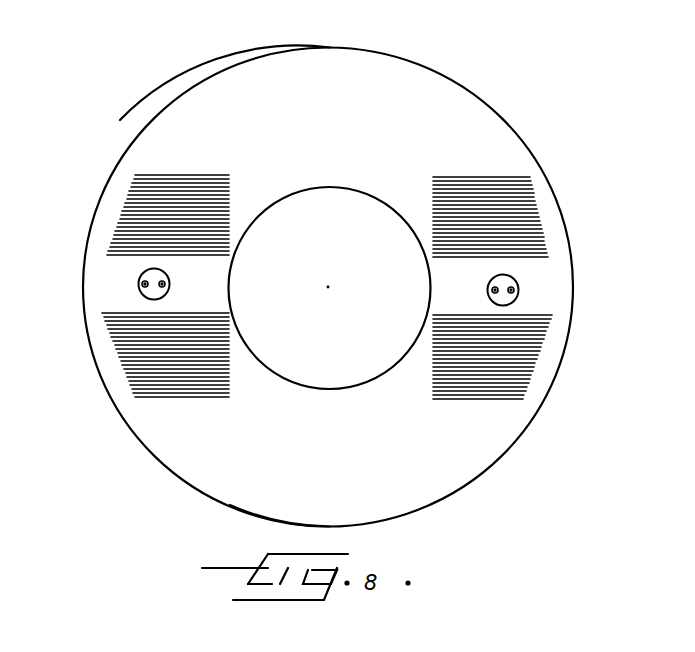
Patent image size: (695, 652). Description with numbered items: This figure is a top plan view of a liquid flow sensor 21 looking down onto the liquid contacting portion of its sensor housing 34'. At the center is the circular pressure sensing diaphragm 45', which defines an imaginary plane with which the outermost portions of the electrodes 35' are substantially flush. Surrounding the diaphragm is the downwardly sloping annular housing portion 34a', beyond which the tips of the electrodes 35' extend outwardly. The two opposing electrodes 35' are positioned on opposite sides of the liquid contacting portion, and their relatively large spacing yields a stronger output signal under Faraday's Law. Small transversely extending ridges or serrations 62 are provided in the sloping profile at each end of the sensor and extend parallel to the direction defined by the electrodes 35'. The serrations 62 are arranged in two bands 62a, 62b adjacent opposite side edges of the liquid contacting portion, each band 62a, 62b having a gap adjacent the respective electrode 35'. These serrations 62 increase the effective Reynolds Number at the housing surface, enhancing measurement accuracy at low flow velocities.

The liquid flow sensor 21 is at (497, 73).
The sensor housing 34' is at (225, 63).
The downwardly sloping annular housing portion 34a' is at (240, 501).
The pressure sensing diaphragm 45' is at (330, 249).
The serrations 62 is at (178, 213).
The first band of serrations 62a is at (177, 398).
The second band of serrations 62b is at (503, 403).
The electrodes 35' is at (326, 266).